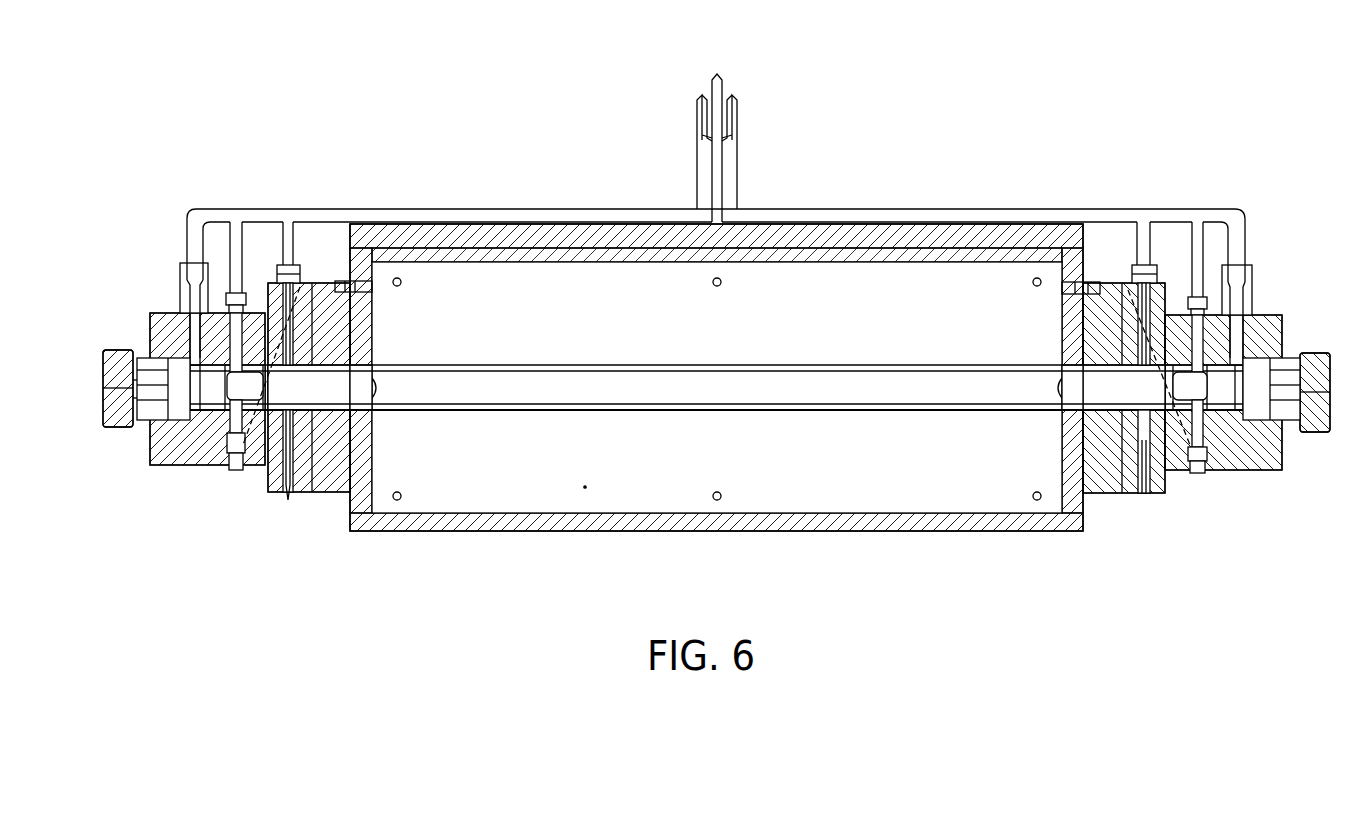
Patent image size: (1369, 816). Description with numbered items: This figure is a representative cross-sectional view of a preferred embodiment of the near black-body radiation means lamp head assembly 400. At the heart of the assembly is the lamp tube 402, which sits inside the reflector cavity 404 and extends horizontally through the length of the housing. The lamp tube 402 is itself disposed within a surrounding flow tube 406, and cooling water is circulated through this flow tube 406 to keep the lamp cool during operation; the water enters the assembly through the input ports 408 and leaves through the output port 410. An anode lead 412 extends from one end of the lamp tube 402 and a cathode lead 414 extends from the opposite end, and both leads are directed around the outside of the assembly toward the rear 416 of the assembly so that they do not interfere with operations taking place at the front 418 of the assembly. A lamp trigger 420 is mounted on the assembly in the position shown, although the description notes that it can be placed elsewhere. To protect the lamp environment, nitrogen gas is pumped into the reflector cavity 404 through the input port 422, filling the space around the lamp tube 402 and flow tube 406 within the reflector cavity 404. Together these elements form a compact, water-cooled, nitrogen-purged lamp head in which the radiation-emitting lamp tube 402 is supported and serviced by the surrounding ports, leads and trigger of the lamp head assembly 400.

The lamp head assembly 400 is at (707, 308).
The lamp tube 402 is at (570, 372).
The reflector cavity 404 is at (717, 387).
The flow tube 406 is at (765, 372).
The input ports 408 is at (298, 255).
The output port 410 is at (1133, 257).
The anode lead 412 is at (190, 210).
The cathode lead 414 is at (1248, 258).
The rear of the assembly 416 is at (587, 210).
The front of the assembly 418 is at (973, 532).
The lamp trigger 420 is at (290, 497).
The input port 422 is at (240, 257).